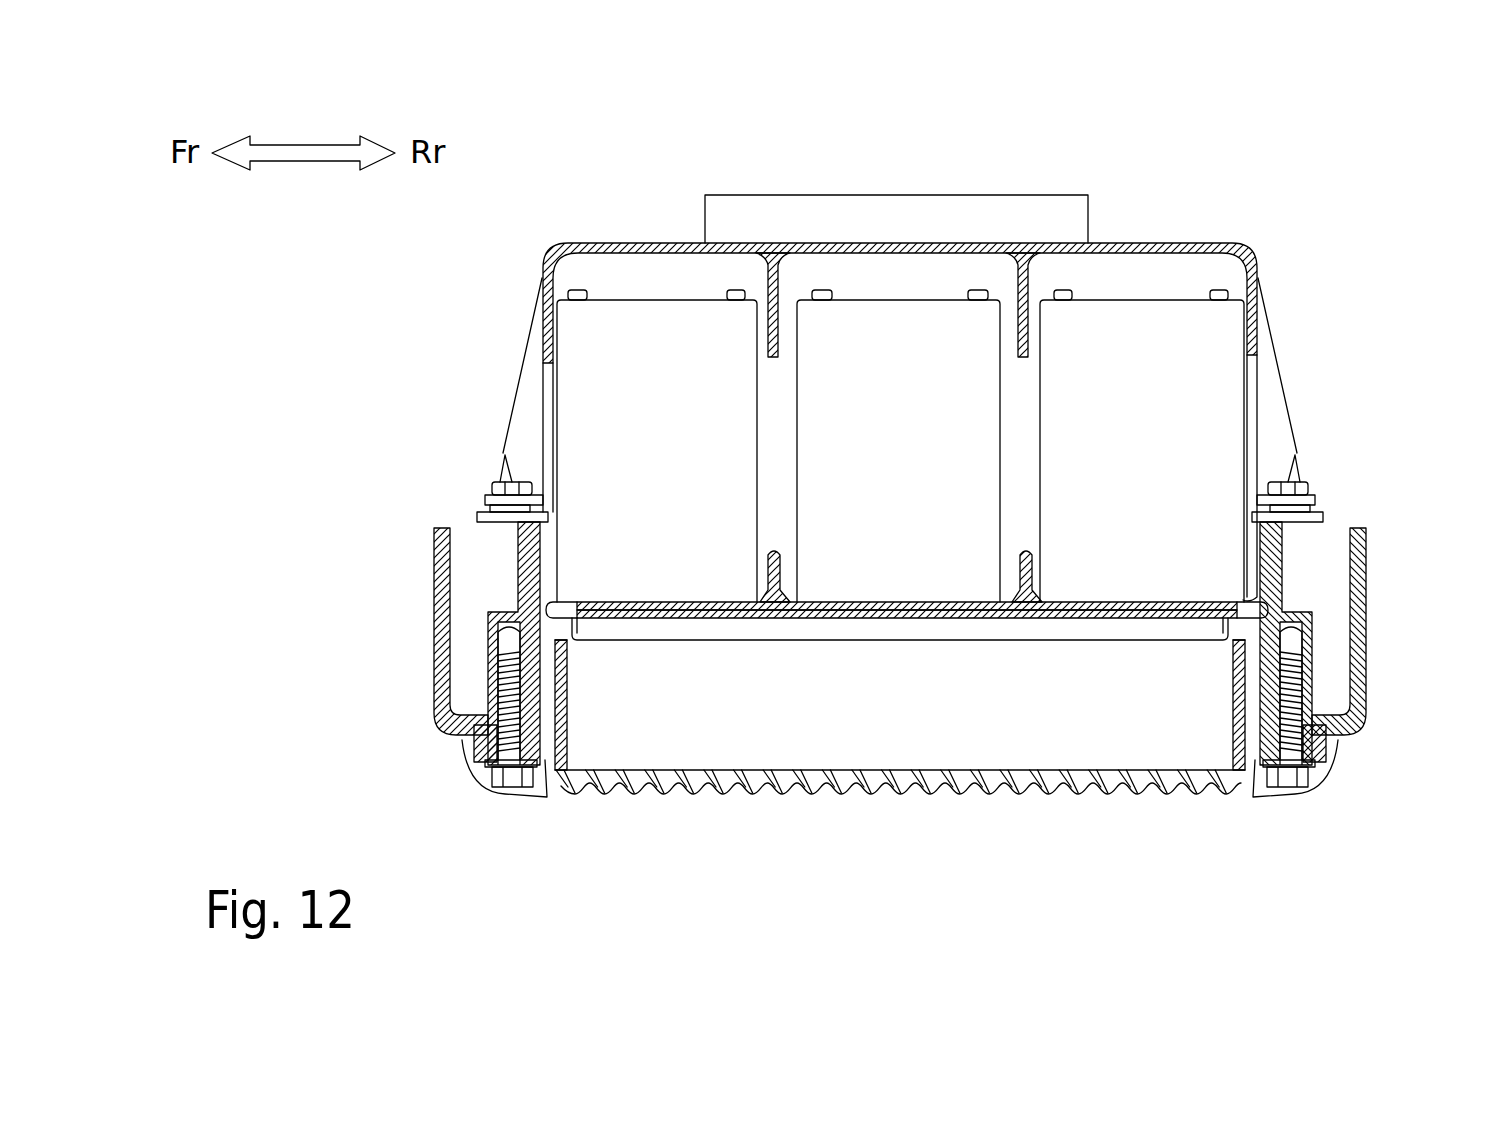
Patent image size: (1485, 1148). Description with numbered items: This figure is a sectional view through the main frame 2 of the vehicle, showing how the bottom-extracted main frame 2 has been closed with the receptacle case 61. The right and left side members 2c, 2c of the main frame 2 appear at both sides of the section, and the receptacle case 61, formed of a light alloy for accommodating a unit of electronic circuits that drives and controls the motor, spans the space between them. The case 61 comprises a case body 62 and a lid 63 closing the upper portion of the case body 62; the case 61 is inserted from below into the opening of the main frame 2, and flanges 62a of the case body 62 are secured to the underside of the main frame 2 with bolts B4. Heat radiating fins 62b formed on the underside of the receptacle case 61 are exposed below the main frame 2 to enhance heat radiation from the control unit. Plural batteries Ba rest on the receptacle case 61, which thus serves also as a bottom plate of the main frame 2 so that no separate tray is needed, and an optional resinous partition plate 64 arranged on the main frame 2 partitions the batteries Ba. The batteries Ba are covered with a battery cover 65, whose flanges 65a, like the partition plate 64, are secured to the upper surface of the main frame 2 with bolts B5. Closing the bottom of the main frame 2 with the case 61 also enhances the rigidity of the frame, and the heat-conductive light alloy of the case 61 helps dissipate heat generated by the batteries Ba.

The main frame 2 is at (356, 390).
The side member 2c is at (1282, 565).
The battery Ba is at (1118, 325).
The bolt B4 is at (1300, 770).
The bolt B5 is at (1294, 456).
The receptacle case 61 is at (925, 862).
The case body 62 is at (805, 792).
The flange 62a is at (1310, 745).
The heat radiating fin 62b is at (1108, 792).
The lid 63 is at (920, 618).
The partition plate 64 is at (858, 600).
The battery cover 65 is at (1175, 245).
The flange 65a is at (1320, 505).